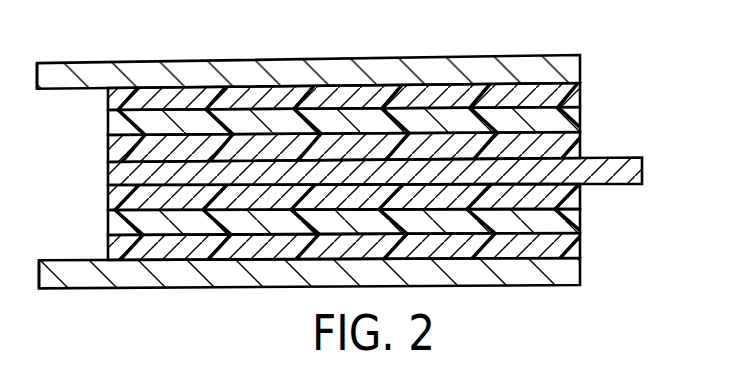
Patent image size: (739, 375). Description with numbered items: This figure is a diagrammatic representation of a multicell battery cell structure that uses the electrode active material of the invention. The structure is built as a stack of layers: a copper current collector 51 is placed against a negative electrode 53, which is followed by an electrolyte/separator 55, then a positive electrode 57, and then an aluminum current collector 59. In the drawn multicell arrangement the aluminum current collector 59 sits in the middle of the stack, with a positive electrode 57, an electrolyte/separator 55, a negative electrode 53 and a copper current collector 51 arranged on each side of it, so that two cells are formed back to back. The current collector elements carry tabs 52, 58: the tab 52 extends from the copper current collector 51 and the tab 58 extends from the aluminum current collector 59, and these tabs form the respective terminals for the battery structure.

The copper current collector 51 is at (570, 72).
The tab 52 is at (83, 62).
The negative electrode 53 is at (575, 98).
The electrolyte/separator 55 is at (577, 122).
The positive electrode 57 is at (112, 143).
The tab 58 is at (642, 172).
The aluminum current collector 59 is at (110, 172).